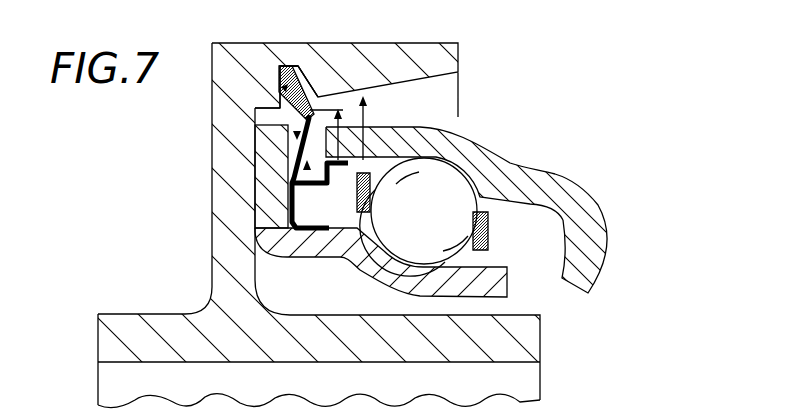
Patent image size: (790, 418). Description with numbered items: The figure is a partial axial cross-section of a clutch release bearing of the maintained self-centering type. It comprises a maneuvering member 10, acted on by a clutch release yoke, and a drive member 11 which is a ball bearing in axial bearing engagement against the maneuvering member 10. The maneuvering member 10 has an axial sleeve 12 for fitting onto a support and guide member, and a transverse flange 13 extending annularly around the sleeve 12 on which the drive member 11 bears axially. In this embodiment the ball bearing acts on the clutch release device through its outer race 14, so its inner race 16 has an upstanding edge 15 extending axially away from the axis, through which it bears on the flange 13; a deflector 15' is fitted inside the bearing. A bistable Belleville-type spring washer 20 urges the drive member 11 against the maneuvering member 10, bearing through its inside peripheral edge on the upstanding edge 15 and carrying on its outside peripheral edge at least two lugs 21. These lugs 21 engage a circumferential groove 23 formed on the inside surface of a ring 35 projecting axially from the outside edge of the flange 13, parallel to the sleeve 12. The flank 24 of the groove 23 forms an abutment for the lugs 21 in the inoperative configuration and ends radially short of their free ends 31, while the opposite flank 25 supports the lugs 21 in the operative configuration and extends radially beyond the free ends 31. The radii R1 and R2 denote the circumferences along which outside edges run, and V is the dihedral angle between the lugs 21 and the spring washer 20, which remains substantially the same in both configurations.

The maneuvering member 10 is at (93, 309).
The drive member 11 is at (587, 178).
The axial sleeve 12 is at (528, 347).
The transverse flange 13 is at (230, 144).
The outer race 14 is at (413, 127).
The upstanding edge 15 is at (230, 176).
The deflector 15' is at (338, 251).
The inner race 16 is at (463, 283).
The spring washer 20 is at (319, 181).
The lug 21 is at (314, 89).
The circumferential groove 23 is at (256, 110).
The flank 24 is at (278, 76).
The flank 25 is at (285, 96).
The free ends 31 is at (281, 66).
The ring 35 is at (372, 62).
The radius R1 is at (332, 134).
The radius R2 is at (376, 128).
The dihedral angle V is at (267, 143).